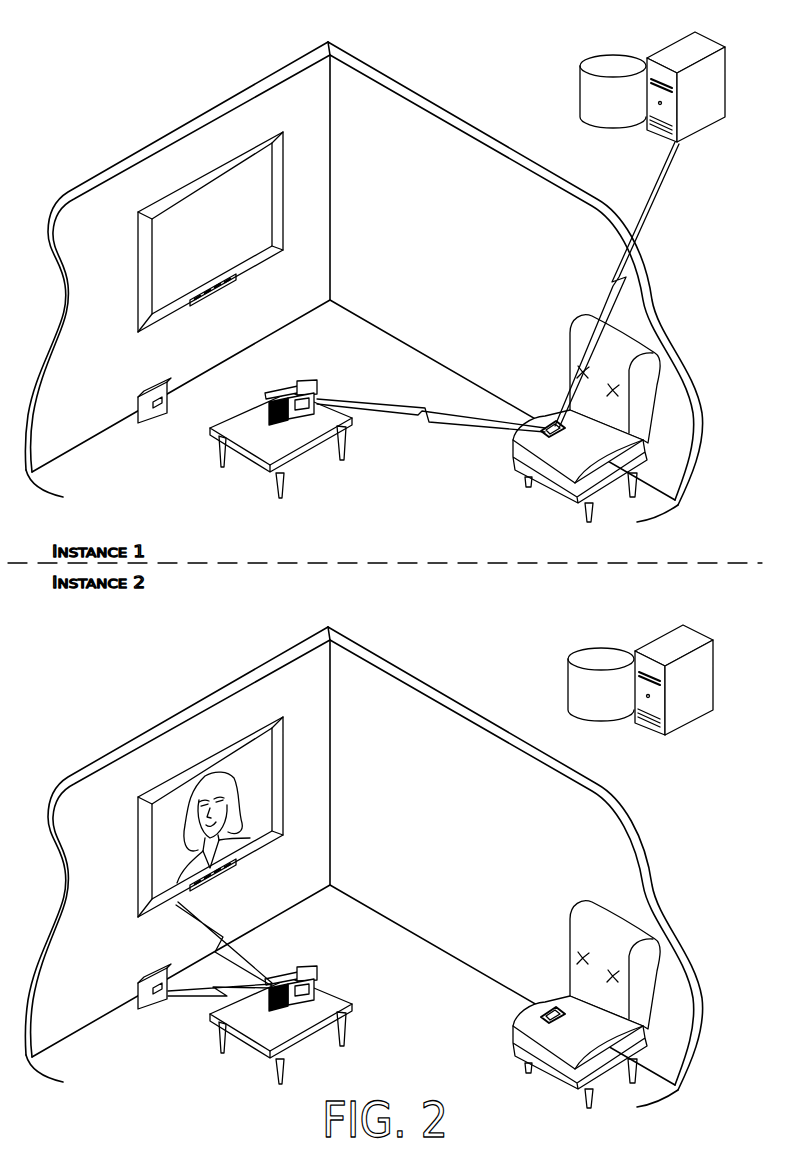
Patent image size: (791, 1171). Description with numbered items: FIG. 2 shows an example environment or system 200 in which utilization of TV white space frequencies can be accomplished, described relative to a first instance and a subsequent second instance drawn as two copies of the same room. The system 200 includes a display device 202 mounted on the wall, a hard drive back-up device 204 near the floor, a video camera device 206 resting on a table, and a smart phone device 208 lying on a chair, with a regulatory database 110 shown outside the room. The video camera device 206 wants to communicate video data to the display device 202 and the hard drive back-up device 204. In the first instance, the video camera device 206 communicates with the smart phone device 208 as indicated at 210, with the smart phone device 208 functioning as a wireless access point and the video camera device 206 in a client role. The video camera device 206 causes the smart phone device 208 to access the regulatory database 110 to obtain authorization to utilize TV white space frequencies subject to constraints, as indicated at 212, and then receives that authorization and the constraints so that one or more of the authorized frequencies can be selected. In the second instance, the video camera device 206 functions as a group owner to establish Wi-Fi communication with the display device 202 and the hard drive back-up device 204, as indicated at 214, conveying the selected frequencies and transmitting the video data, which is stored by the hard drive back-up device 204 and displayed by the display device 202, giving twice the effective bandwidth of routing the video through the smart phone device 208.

The system 200 is at (147, 28).
The regulatory database 110 is at (677, 38).
The display device 202 is at (286, 121).
The hard drive back-up device 204 is at (149, 423).
The video camera device 206 is at (269, 426).
The smart phone device 208 is at (557, 437).
The communication between video camera device and smart phone device 210 is at (425, 408).
The access to regulatory database 212 is at (658, 183).
The Wi-Fi communication 214 is at (247, 985).